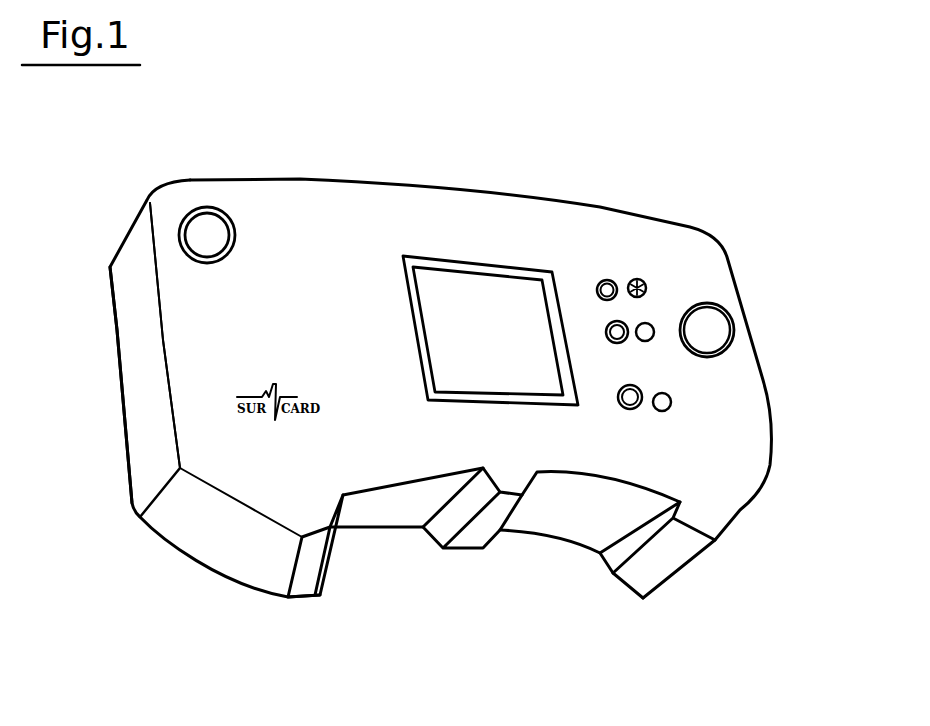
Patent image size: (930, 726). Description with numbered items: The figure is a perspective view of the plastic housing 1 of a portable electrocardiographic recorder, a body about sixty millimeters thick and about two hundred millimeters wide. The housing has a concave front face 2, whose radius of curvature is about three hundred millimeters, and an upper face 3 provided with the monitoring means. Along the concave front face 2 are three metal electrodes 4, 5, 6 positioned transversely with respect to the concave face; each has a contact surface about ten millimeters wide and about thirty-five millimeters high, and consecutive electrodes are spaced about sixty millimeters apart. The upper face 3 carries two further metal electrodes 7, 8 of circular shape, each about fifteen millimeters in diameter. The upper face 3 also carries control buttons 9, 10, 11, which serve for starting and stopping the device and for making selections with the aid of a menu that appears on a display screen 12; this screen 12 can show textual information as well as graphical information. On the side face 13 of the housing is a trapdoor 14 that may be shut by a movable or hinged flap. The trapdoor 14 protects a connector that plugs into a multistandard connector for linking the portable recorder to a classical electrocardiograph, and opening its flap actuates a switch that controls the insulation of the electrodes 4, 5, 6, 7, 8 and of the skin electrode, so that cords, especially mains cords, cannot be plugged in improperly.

The housing 1 is at (128, 273).
The concave front face 2 is at (555, 527).
The upper face 3 is at (333, 210).
The metal electrode 4 is at (287, 598).
The metal electrode 5 is at (463, 542).
The metal electrode 6 is at (663, 572).
The circular metal electrode 7 is at (230, 215).
The circular metal electrode 8 is at (735, 335).
The control button 9 is at (640, 407).
The control button 10 is at (628, 323).
The control button 11 is at (605, 277).
The display screen 12 is at (465, 260).
The side face 13 is at (132, 377).
The trapdoor 14 is at (157, 493).